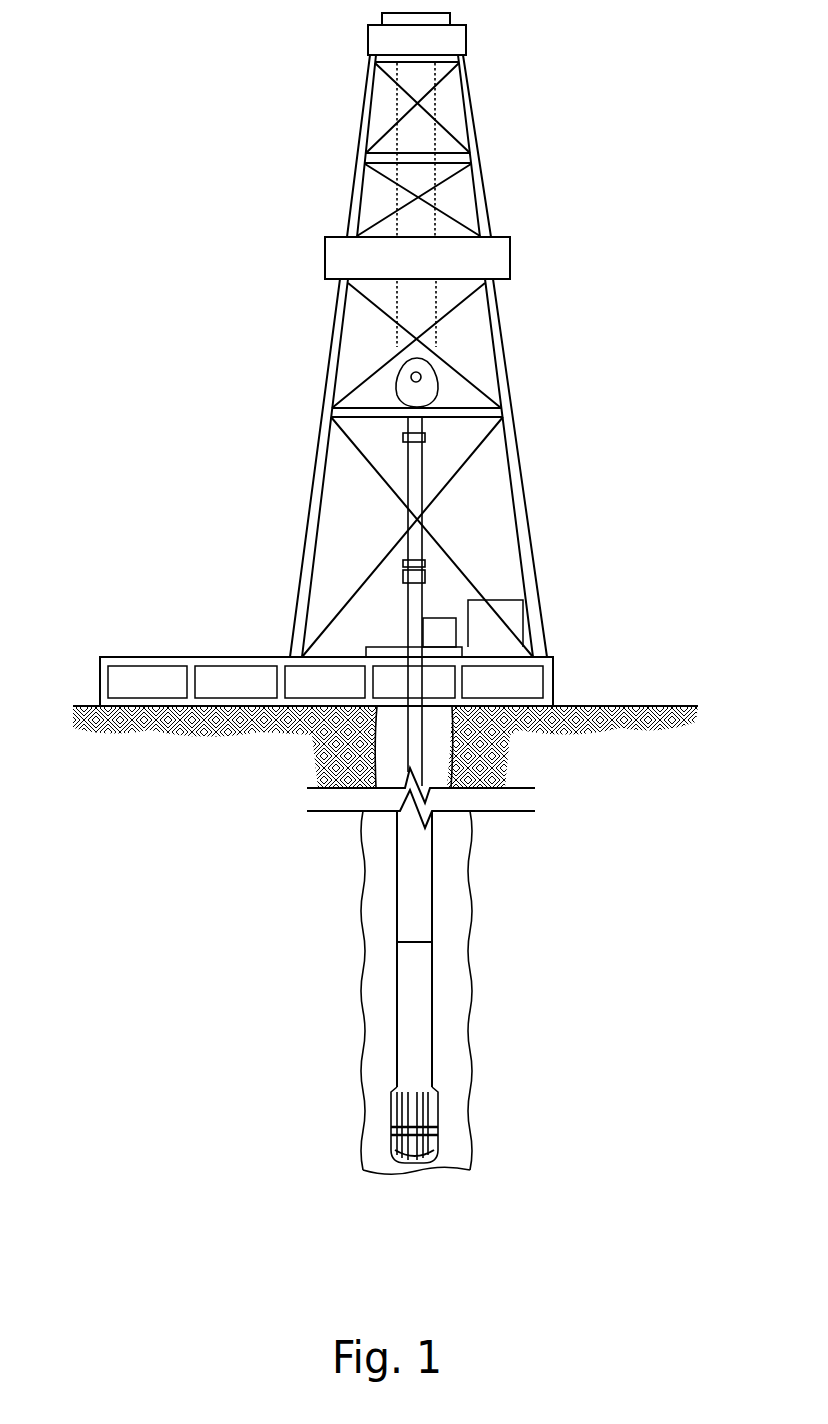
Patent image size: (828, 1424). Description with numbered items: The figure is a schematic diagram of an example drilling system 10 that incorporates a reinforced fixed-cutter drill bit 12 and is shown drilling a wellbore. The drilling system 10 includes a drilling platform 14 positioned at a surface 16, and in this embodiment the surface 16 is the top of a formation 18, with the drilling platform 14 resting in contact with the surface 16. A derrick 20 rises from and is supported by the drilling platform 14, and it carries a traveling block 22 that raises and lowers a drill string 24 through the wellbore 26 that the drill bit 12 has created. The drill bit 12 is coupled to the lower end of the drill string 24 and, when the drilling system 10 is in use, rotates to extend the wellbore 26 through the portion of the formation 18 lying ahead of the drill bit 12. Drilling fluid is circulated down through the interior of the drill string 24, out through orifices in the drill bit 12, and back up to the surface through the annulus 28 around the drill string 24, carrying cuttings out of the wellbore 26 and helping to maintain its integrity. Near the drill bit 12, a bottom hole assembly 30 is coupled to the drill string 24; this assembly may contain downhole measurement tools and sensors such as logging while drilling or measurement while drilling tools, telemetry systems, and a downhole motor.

The drilling system 10 is at (155, 114).
The drill bit 12 is at (437, 1137).
The drilling platform 14 is at (345, 660).
The surface 16 is at (627, 705).
The formation 18 is at (567, 1022).
The derrick 20 is at (520, 453).
The traveling block 22 is at (432, 387).
The drill string 24 is at (407, 755).
The wellbore 26 is at (453, 855).
The annulus 28 is at (375, 998).
The bottom hole assembly 30 is at (381, 958).